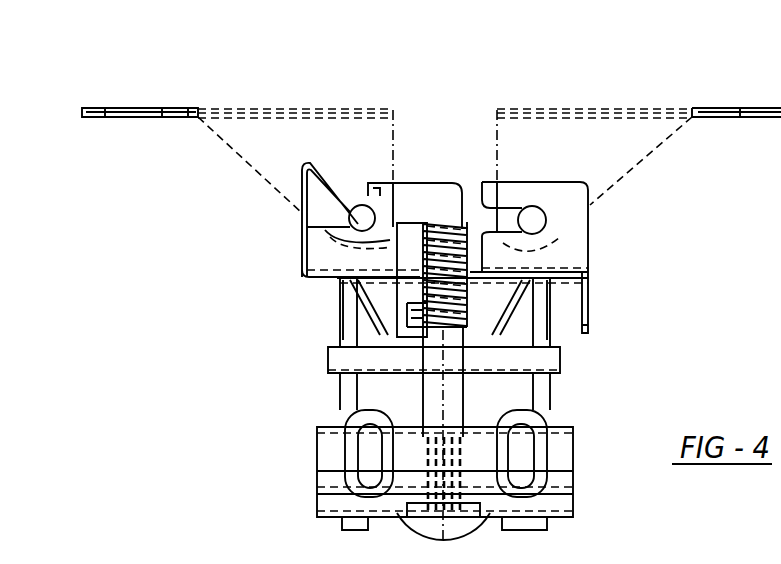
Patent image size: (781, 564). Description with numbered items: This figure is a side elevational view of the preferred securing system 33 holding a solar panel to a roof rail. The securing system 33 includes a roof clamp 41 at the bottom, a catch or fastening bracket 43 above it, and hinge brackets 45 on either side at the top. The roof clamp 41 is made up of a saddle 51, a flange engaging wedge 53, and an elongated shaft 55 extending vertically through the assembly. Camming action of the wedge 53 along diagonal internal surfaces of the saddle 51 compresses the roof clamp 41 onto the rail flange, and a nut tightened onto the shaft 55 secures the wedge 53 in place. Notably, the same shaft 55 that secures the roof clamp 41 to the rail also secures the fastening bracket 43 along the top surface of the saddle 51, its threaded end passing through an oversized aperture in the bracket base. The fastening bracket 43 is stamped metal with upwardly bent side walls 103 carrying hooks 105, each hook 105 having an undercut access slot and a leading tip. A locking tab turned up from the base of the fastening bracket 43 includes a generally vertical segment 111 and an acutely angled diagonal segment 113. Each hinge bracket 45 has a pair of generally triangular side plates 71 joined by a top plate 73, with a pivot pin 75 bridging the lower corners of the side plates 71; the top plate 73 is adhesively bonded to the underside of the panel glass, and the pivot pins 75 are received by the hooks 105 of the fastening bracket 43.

The securing system 33 is at (238, 437).
The roof clamp 41 is at (592, 353).
The fastening bracket 43 is at (670, 267).
The hinge bracket 45 is at (677, 230).
The saddle 51 is at (533, 397).
The flange engaging wedge 53 is at (573, 448).
The shaft 55 is at (443, 400).
The side plate 71 is at (613, 150).
The top plate 73 is at (578, 110).
The pivot pin 75 is at (533, 221).
The side wall 103 is at (323, 250).
The hook 105 is at (482, 193).
The vertical segment 111 is at (298, 217).
The diagonal segment 113 is at (323, 182).